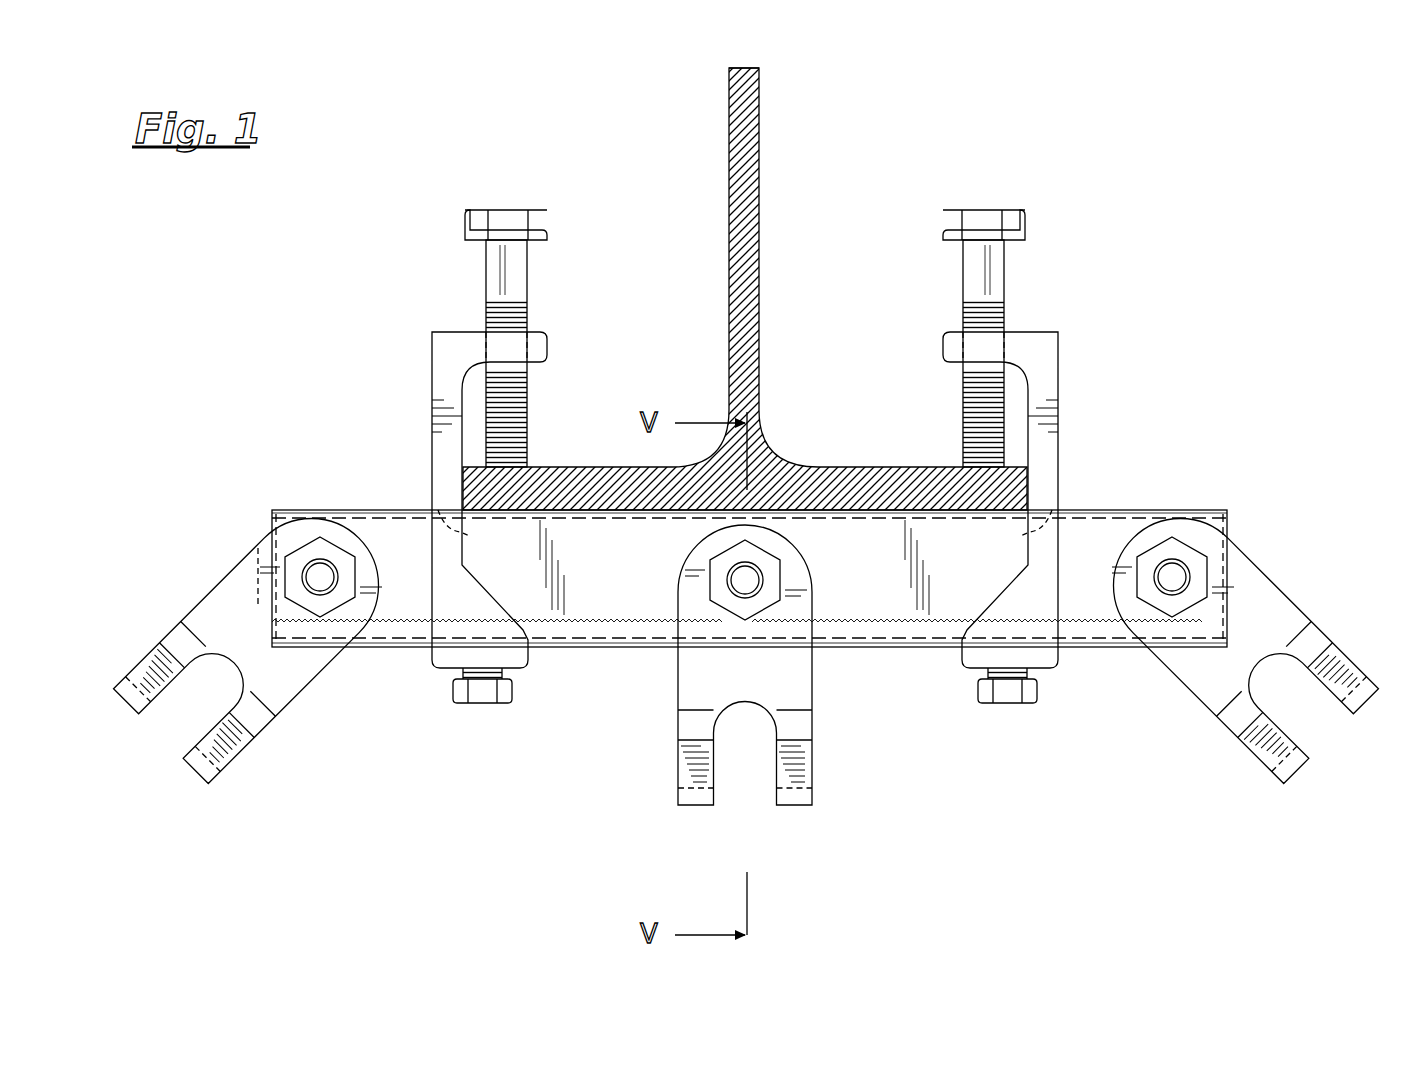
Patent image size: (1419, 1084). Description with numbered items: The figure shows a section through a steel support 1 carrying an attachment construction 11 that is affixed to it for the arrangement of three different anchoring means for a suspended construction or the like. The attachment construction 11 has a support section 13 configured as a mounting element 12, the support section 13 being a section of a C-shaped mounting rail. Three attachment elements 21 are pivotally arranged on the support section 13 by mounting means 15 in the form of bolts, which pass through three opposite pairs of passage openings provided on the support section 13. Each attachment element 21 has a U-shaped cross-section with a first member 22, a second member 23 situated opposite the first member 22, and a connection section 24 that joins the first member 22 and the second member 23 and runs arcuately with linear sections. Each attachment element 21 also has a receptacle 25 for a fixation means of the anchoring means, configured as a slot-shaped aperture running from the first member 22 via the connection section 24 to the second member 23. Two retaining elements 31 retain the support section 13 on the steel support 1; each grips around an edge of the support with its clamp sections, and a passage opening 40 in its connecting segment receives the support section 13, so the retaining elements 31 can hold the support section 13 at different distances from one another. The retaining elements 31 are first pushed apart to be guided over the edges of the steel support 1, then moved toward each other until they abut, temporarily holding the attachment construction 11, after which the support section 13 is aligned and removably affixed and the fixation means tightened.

The steel support 1 is at (745, 184).
The attachment construction 11 is at (1248, 270).
The mounting element 12 is at (878, 650).
The support section 13 is at (1093, 528).
The mounting means 15 is at (320, 577).
The attachment element 21 is at (200, 598).
The first member 22 is at (262, 557).
The second member 23 is at (292, 680).
The connection section 24 is at (222, 765).
The receptacle 25 is at (155, 745).
The retaining element 31 is at (432, 350).
The passage opening 40 is at (745, 538).